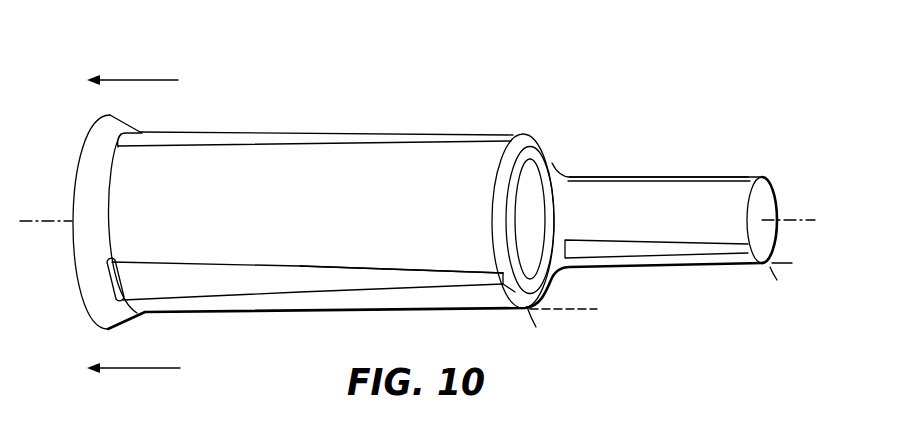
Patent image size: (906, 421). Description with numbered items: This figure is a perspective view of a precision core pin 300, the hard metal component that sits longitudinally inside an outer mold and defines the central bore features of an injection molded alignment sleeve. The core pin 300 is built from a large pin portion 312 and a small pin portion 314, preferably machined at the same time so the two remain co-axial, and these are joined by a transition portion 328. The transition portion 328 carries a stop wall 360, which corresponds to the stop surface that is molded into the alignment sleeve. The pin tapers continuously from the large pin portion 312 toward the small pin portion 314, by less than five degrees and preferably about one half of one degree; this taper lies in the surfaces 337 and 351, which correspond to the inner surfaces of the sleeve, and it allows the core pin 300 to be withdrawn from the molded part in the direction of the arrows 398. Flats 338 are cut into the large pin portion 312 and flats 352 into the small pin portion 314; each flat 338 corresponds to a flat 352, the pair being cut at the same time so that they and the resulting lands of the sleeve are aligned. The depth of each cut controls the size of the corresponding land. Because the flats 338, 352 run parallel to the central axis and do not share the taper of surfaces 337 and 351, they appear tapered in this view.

The precision core pin 300 is at (575, 66).
The large pin portion 312 is at (371, 100).
The small pin portion 314 is at (705, 135).
The transition portion 328 is at (537, 120).
The tapered surface of large pin portion 337 is at (423, 258).
The flats 338 is at (252, 137).
The tapered surface of small pin portion 351 is at (703, 232).
The flats 352 is at (610, 179).
The stop wall 360 is at (531, 149).
The arrows 398 is at (138, 80).